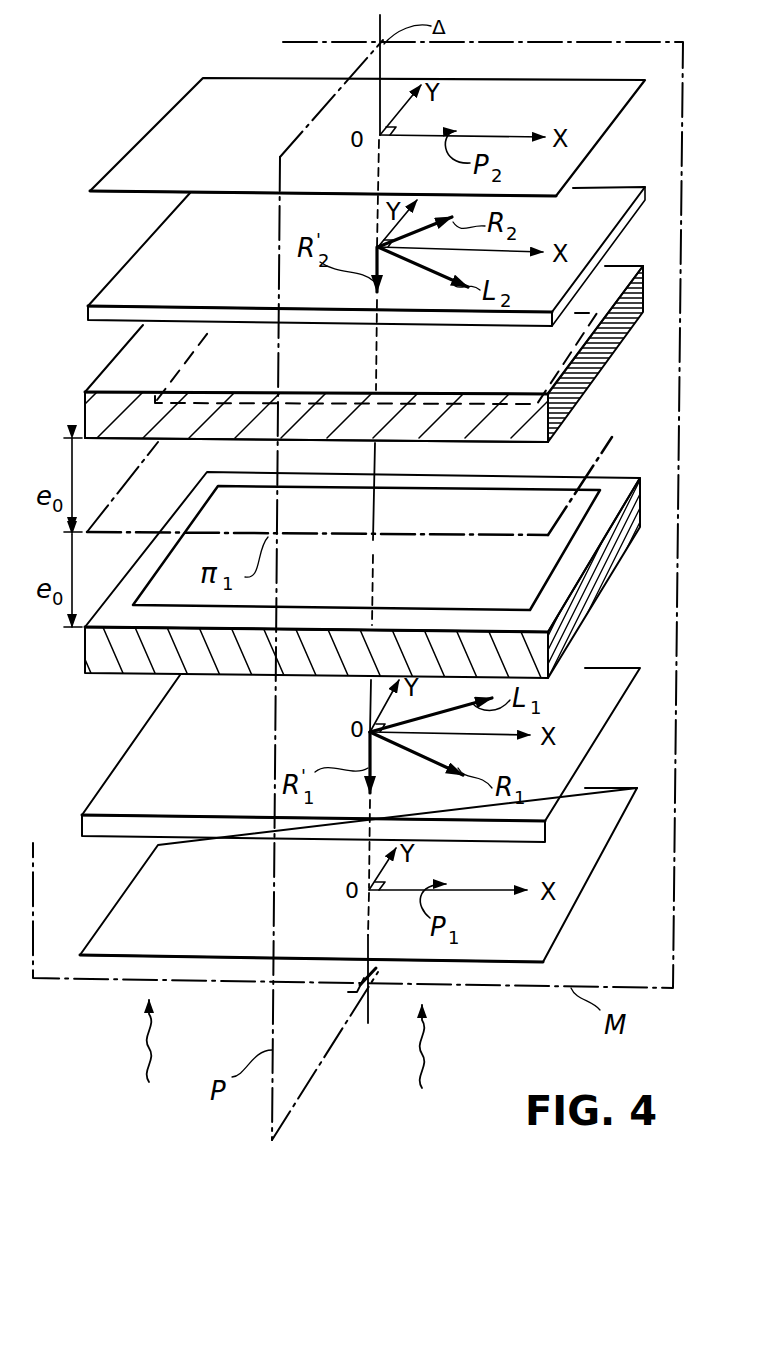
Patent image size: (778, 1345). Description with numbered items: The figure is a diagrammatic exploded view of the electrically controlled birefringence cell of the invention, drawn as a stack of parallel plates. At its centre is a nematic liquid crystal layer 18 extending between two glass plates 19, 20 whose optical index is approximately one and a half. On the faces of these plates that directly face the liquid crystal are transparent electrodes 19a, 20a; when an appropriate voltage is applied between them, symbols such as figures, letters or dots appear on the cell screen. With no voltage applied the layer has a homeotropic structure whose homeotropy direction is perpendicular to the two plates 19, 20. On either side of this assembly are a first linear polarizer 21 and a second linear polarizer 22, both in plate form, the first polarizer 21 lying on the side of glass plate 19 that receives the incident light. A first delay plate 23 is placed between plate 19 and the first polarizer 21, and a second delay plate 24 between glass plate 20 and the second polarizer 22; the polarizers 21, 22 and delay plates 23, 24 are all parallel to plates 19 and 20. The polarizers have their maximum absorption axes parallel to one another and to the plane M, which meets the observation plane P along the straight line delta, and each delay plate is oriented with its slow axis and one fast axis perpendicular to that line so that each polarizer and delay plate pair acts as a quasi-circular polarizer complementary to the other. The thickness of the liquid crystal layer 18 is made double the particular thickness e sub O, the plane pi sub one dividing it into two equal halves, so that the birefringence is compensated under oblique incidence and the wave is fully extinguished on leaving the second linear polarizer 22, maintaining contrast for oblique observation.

The nematic liquid crystal layer 18 is at (367, 497).
The glass plate 19 is at (100, 672).
The transparent electrode 19a is at (548, 583).
The glass plate 20 is at (98, 398).
The transparent electrode 20a is at (470, 444).
The first linear polarizer 21 is at (100, 948).
The second linear polarizer 22 is at (175, 117).
The first delay plate 23 is at (92, 832).
The second delay plate 24 is at (135, 288).